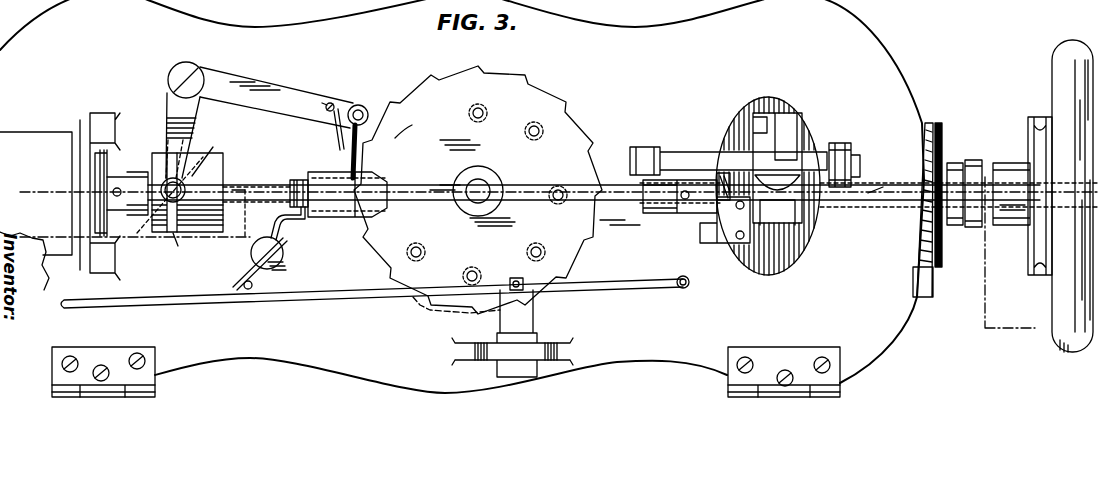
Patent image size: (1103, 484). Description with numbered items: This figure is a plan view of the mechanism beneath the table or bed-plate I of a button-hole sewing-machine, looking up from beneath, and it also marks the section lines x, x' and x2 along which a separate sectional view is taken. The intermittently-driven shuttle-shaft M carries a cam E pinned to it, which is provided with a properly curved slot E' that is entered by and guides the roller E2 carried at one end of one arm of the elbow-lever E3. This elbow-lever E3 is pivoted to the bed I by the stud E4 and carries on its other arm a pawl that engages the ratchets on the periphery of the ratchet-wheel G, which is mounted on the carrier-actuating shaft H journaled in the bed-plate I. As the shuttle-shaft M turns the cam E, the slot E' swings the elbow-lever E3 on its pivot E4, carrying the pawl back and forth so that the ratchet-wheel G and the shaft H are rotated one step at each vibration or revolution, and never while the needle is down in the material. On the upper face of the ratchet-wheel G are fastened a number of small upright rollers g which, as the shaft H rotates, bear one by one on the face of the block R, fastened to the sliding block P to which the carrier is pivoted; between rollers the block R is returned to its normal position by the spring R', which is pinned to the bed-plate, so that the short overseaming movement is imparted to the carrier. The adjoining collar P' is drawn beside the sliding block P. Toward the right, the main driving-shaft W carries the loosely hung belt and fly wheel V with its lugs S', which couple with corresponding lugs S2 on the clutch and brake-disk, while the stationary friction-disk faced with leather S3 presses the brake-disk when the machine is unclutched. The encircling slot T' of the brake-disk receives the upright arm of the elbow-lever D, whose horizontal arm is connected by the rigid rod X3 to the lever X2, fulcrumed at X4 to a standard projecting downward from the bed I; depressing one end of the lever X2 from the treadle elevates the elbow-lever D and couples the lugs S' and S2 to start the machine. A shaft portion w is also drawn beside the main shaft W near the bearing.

The shuttle-shaft M is at (560, 195).
The curved slot E' is at (187, 192).
The roller E2 is at (163, 198).
The eccentric strap E'' is at (256, 179).
The elbow-lever E3 is at (183, 135).
The stud E4 is at (170, 66).
The cam E is at (284, 122).
The sliding block P is at (346, 181).
The collar P' is at (287, 183).
The block R is at (304, 223).
The spring R' is at (256, 263).
The section line x x is at (137, 216).
The section line x' x' is at (603, 190).
The ratchet-wheel G is at (497, 190).
The carrier-actuating shaft H is at (481, 184).
The upright rollers g is at (527, 131).
The lever X2 is at (300, 312).
The rigid rod X3 is at (687, 286).
The fulcrum X4 is at (515, 327).
The main driving-shaft W is at (745, 186).
The bearing shaft w is at (867, 194).
The bed-plate I is at (674, 79).
The leather facing S3 is at (927, 125).
The elbow-lever D is at (958, 163).
The encircling slot T' is at (966, 203).
The lugs S' is at (1019, 196).
The lugs S2 is at (985, 210).
The belt and fly wheel V is at (1072, 196).
The section line x² x² x2 is at (1011, 331).